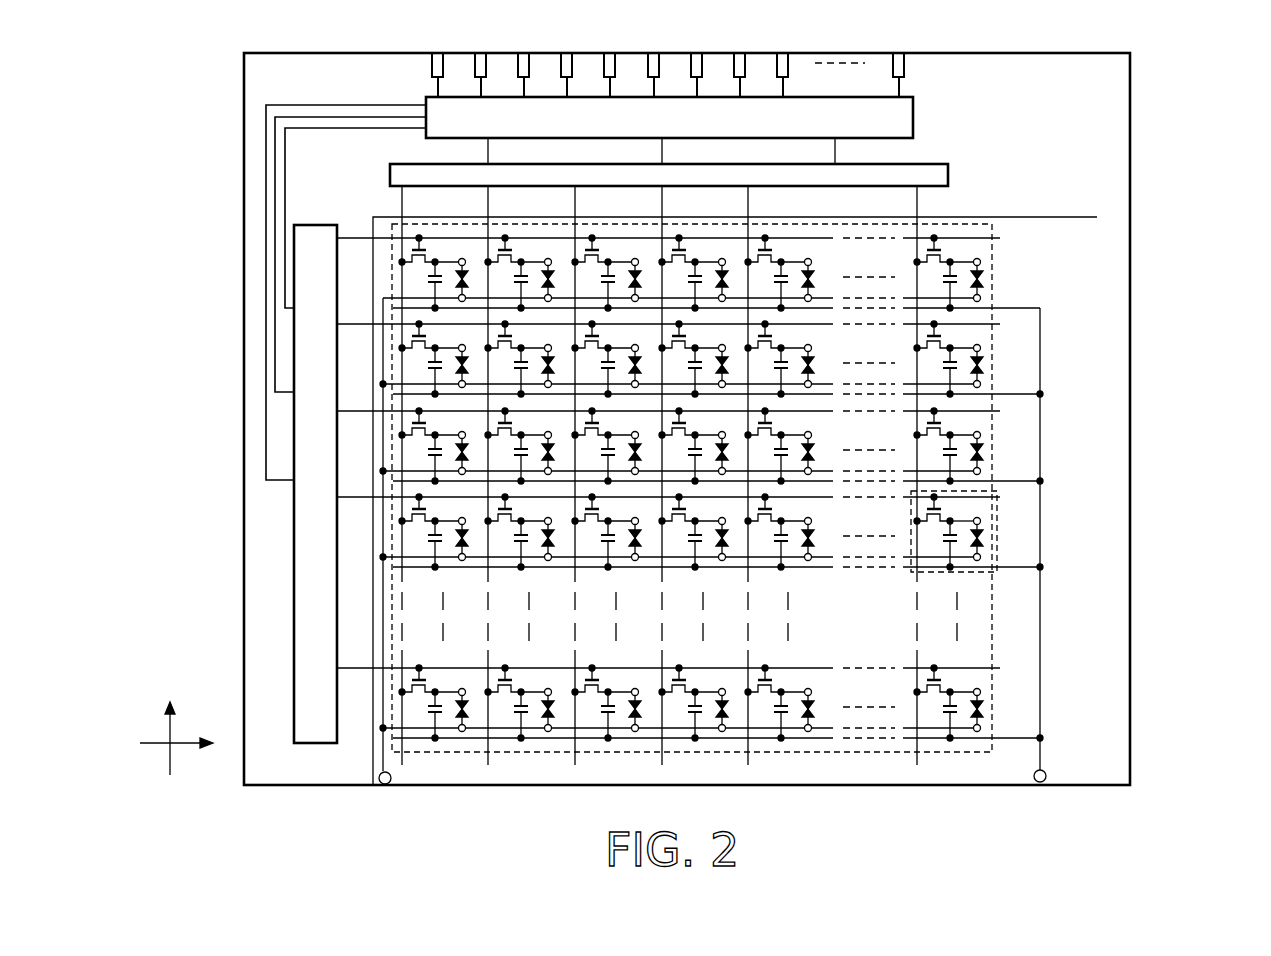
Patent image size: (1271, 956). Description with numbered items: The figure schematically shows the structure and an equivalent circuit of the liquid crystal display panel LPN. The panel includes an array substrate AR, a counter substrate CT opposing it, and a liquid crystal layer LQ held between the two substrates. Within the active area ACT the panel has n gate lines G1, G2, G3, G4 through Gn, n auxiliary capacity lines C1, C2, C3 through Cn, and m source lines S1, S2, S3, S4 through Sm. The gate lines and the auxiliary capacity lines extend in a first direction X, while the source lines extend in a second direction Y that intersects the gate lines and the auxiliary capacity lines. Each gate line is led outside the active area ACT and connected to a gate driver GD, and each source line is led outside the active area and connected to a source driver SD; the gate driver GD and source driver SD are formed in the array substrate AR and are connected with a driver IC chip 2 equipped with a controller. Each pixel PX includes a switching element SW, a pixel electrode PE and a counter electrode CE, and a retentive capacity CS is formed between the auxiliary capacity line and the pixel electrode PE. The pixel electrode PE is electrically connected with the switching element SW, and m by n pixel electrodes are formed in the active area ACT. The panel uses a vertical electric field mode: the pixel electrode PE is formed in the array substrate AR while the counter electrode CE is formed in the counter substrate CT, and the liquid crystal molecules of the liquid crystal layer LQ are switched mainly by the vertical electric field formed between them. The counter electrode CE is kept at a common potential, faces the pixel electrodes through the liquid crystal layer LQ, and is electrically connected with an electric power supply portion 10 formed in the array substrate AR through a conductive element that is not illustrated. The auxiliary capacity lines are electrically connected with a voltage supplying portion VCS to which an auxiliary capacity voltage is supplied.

The liquid crystal display panel LPN is at (1170, 63).
The driver IC chip 2 is at (912, 97).
The source driver SD is at (948, 170).
The gate driver GD is at (294, 600).
The counter substrate CT is at (1097, 217).
The active area ACT is at (992, 343).
The source line S1 is at (405, 205).
The source line S2 is at (491, 205).
The source line S3 is at (578, 205).
The source line S4 is at (665, 205).
The source line Sm is at (920, 205).
The gate line G1 is at (351, 237).
The gate line G2 is at (351, 323).
The gate line G3 is at (351, 410).
The gate line G4 is at (351, 496).
The gate line Gn is at (352, 667).
The auxiliary capacity line C1 is at (1017, 307).
The auxiliary capacity line C2 is at (1017, 393).
The auxiliary capacity line C3 is at (1017, 480).
The auxiliary capacity line Cn is at (1017, 737).
The voltage supplying portion VCS is at (1046, 772).
The electric power supply portion 10 is at (390, 783).
The pixel PX is at (997, 572).
The switching element SW is at (910, 512).
The retentive capacity CS is at (928, 543).
The pixel electrode PE is at (980, 519).
The liquid crystal layer LQ is at (980, 536).
The counter electrode CE is at (981, 556).
The array substrate AR is at (311, 777).
The first direction X is at (187, 744).
The second direction Y is at (169, 722).